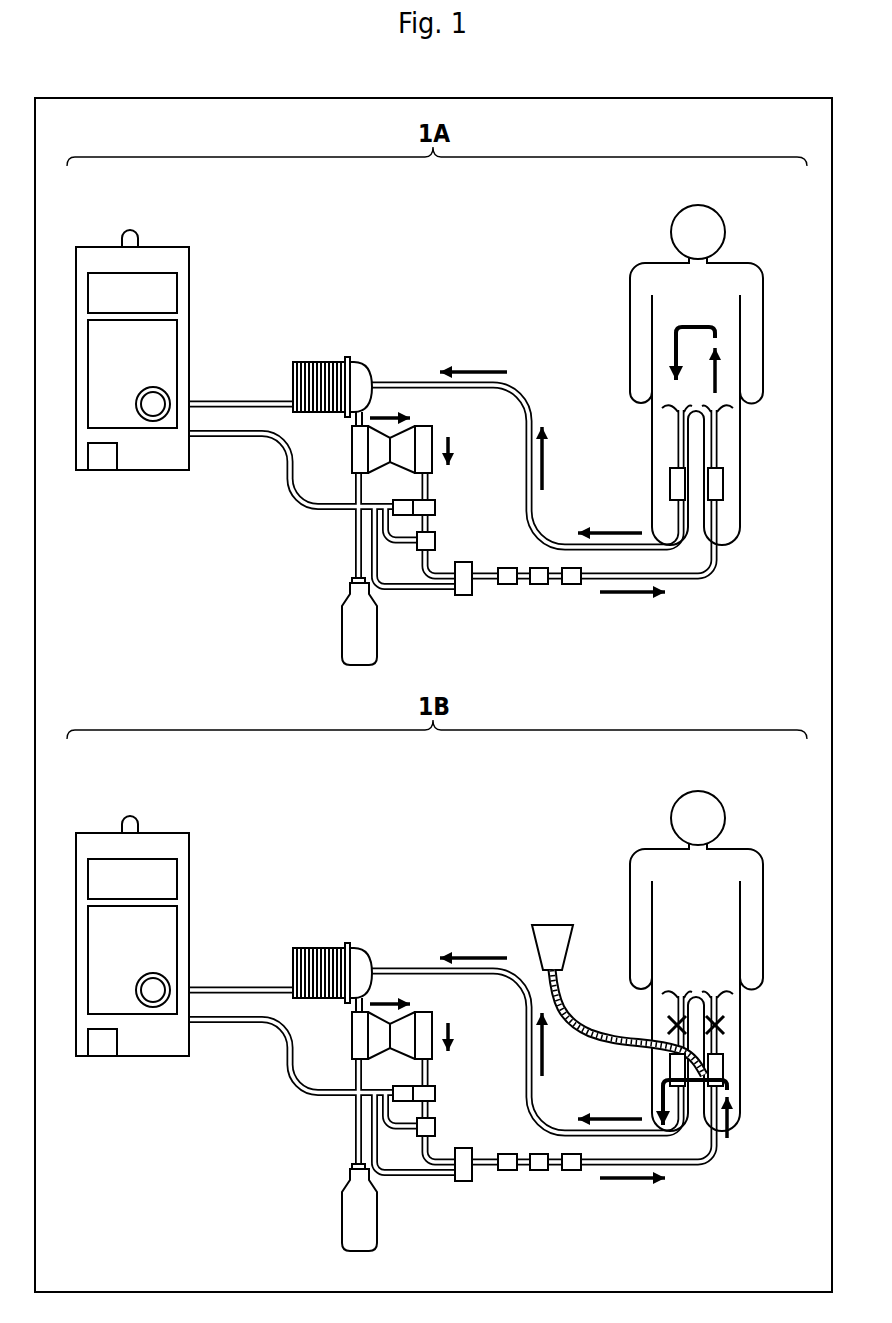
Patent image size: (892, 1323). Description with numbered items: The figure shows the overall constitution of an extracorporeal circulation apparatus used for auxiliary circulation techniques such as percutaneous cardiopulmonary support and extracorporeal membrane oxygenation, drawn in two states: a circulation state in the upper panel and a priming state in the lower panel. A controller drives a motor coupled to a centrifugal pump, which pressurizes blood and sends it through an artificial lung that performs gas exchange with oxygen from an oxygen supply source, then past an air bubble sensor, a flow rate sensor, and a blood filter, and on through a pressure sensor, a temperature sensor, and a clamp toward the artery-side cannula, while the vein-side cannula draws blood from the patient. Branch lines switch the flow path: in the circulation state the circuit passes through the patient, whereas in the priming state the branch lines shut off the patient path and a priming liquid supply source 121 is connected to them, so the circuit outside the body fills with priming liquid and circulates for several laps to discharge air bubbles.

The priming liquid supply source 121 is at (592, 981).